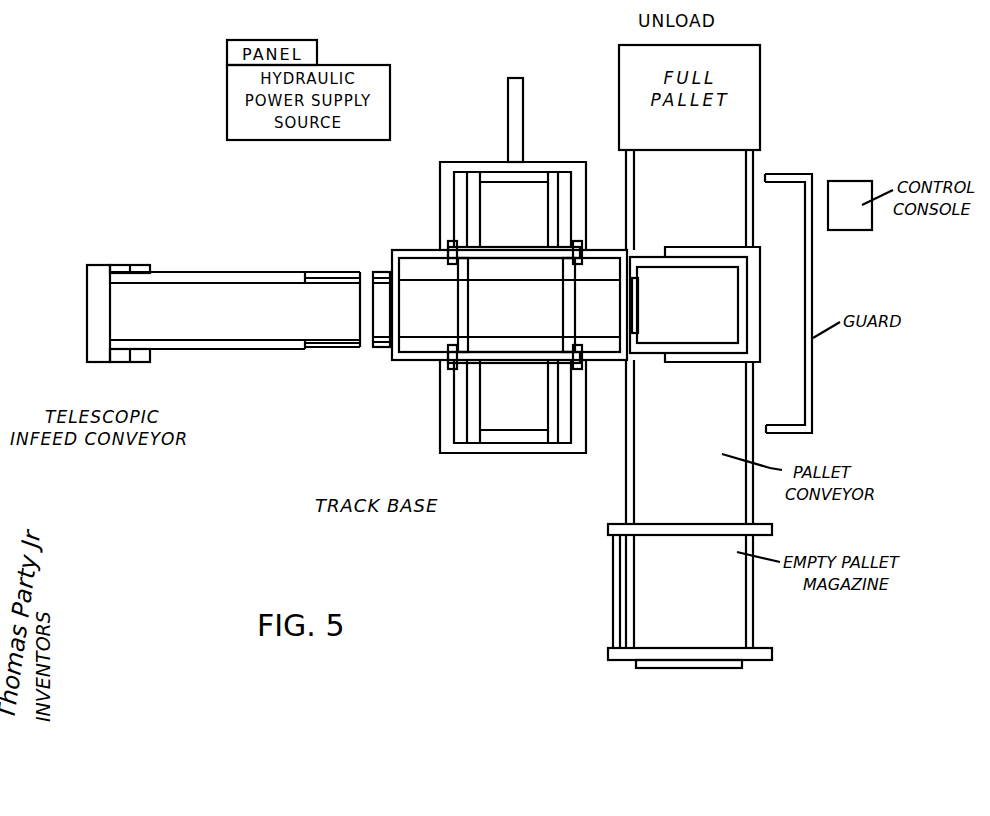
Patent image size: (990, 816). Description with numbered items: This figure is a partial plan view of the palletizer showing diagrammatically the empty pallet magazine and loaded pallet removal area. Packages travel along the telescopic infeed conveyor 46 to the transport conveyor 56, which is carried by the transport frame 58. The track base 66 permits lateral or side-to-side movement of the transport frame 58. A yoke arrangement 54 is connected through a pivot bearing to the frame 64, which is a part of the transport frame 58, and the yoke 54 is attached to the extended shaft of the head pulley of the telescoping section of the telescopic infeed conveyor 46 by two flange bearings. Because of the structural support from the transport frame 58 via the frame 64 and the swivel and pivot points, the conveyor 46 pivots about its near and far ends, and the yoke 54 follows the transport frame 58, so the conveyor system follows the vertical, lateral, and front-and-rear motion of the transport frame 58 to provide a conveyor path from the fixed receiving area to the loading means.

The telescopic infeed conveyor 46 is at (133, 325).
The yoke arrangement 54 is at (368, 342).
The transport conveyor 56 is at (425, 297).
The transport frame 58 is at (742, 297).
The frame 64 is at (419, 253).
The track base 66 is at (448, 436).